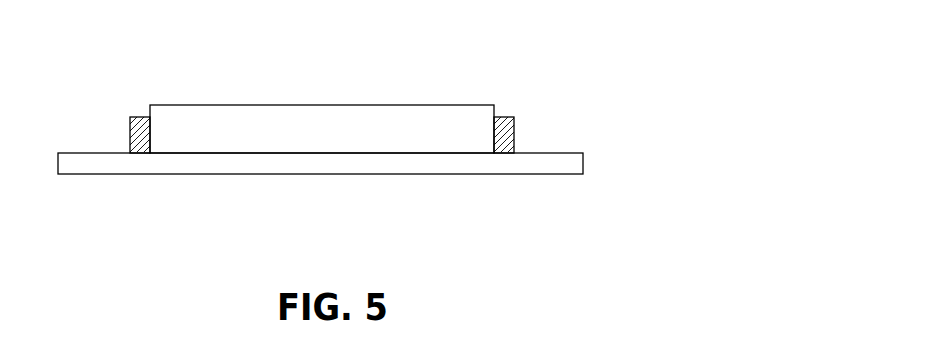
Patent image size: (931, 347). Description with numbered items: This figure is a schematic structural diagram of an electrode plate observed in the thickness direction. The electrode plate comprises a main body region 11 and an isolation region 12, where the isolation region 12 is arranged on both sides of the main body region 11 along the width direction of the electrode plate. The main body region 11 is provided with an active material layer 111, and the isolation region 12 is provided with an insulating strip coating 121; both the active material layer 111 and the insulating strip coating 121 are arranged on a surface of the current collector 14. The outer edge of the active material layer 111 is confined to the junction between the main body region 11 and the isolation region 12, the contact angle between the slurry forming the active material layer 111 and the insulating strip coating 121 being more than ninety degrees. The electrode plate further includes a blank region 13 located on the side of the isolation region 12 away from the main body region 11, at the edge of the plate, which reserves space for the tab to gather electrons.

The main body region 11 is at (322, 85).
The active material layer 111 is at (322, 177).
The isolation region 12 is at (372, 101).
The insulating strip coating 121 is at (558, 185).
The blank region 13 is at (346, 133).
The current collector 14 is at (320, 196).